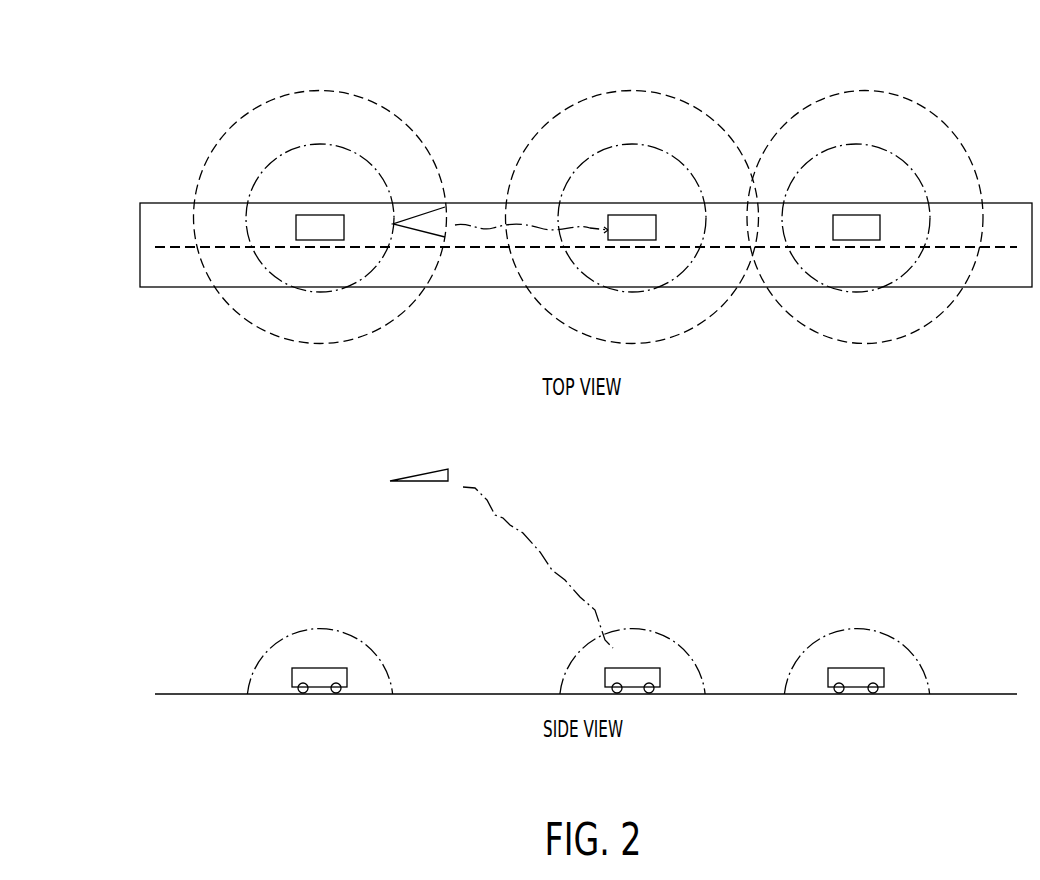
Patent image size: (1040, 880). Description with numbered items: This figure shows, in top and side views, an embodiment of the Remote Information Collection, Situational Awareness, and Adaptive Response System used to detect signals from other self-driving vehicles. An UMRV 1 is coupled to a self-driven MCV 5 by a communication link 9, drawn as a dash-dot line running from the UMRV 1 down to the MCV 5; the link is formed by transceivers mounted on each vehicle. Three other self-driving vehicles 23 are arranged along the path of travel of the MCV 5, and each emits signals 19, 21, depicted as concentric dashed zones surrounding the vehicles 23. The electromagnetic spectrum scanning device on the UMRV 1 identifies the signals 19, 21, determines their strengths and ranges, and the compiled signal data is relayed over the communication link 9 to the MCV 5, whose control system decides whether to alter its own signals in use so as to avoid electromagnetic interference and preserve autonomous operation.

The UMRV 1 is at (433, 225).
The MCV 5 is at (632, 240).
The communication link 9 is at (493, 230).
The signal 19 is at (318, 90).
The signal 21 is at (383, 642).
The self-driving vehicle 23 is at (296, 228).